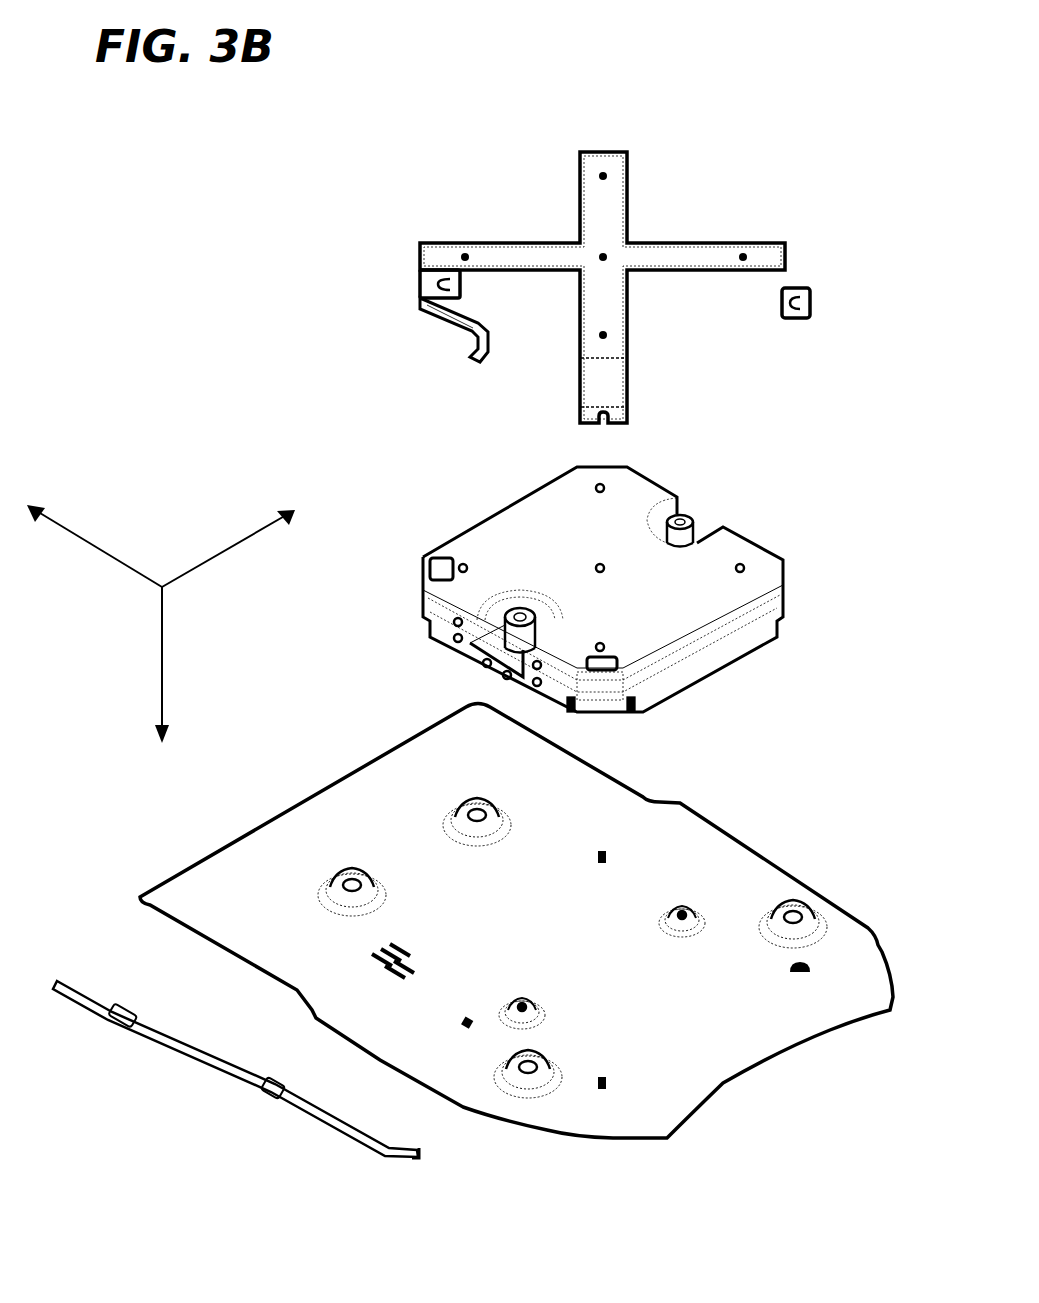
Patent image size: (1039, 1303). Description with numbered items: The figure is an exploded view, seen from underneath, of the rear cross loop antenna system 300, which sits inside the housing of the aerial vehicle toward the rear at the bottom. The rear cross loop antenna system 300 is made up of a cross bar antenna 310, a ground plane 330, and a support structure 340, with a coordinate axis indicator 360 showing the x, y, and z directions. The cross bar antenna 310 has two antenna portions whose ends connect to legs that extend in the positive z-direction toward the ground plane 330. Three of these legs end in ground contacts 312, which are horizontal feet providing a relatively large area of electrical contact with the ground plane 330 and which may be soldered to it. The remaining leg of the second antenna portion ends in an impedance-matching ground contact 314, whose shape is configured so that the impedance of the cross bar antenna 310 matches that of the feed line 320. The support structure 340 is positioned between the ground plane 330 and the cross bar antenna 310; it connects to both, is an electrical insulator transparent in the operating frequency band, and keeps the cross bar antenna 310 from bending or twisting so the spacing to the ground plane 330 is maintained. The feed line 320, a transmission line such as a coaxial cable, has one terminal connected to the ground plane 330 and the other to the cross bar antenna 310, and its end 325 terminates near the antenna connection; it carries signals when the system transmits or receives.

The rear cross loop antenna system 300 is at (362, 681).
The cross bar antenna 310 is at (615, 225).
The ground contact 312 is at (810, 313).
The impedance-matching ground contact 314 is at (468, 360).
The feed line 320 is at (233, 1077).
The bar end hook 325 is at (418, 1153).
The ground plane 330 is at (747, 1052).
The support structure 340 is at (763, 567).
The coordinate system 360 is at (161, 618).